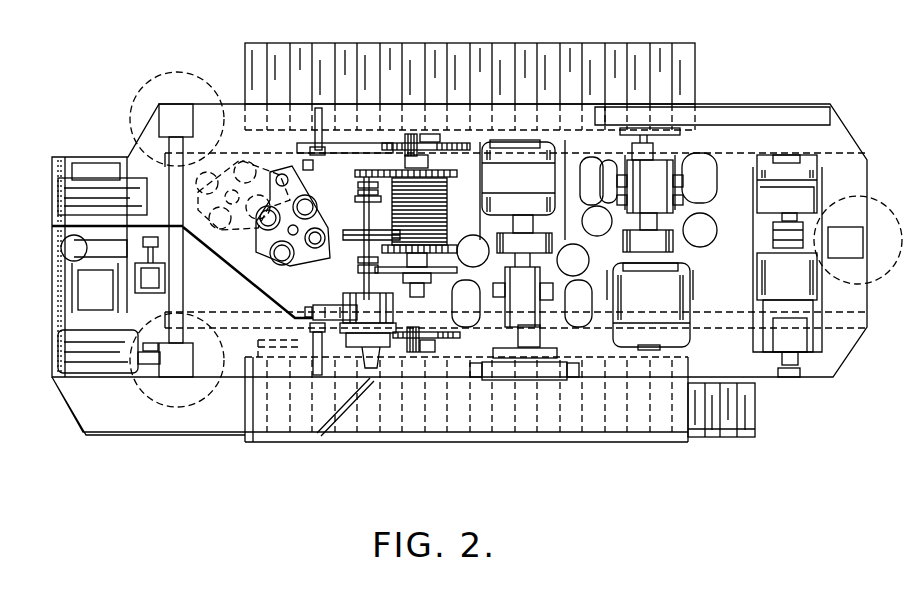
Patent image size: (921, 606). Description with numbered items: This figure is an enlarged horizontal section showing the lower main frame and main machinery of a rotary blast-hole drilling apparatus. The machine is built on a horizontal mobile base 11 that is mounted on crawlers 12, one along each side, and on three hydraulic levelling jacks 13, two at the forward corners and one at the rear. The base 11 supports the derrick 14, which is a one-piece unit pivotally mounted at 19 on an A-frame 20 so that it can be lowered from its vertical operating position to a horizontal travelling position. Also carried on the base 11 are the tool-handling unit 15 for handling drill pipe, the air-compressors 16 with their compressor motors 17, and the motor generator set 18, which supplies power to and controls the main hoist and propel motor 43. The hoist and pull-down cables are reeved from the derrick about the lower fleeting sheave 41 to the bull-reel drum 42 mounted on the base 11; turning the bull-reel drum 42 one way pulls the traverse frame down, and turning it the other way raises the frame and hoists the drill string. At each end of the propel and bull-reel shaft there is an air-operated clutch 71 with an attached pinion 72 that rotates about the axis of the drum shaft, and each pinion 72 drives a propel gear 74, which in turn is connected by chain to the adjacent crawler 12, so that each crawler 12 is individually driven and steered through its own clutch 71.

The horizontal mobile base 11 is at (120, 413).
The crawlers 12 is at (285, 440).
The hydraulic levelling jacks 13 is at (140, 100).
The derrick 14 is at (342, 165).
The tool-handling unit 15 is at (268, 248).
The air-compressors 16 is at (653, 177).
The compressor motors 17 is at (512, 147).
The motor generator set 18 is at (802, 305).
The pivotal mounting 19 is at (328, 160).
The A-frame 20 is at (323, 117).
The lower fleeting sheave 41 is at (358, 233).
The bull-reel drum 42 is at (443, 222).
The main hoist and propel motor 43 is at (367, 303).
The air-operated clutch 71 is at (435, 143).
The pinion 72 is at (415, 145).
The propel gear 74 is at (463, 145).